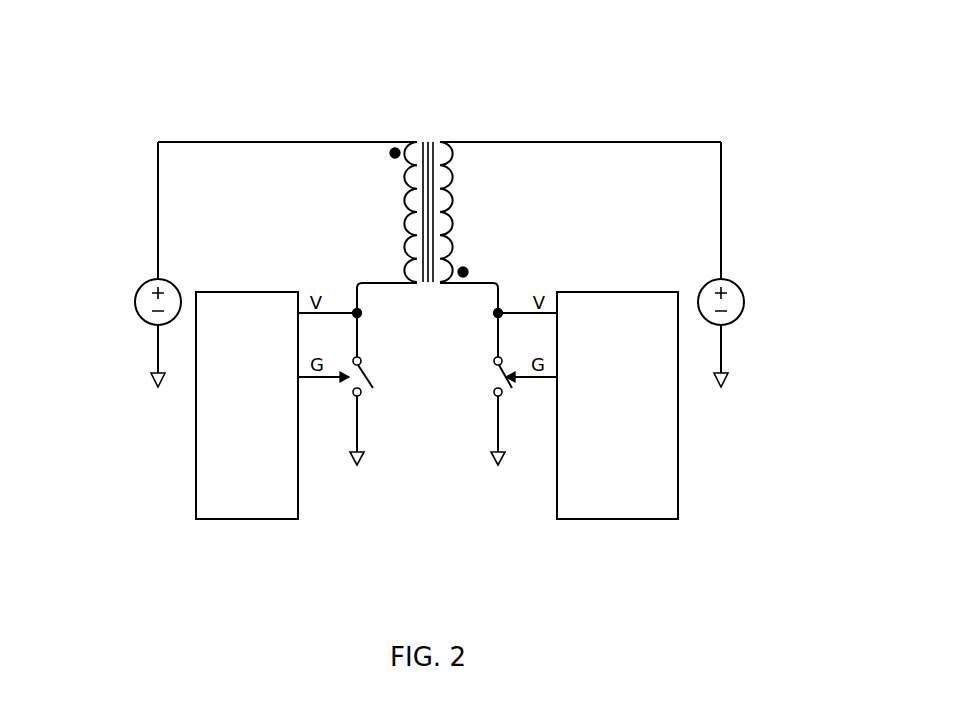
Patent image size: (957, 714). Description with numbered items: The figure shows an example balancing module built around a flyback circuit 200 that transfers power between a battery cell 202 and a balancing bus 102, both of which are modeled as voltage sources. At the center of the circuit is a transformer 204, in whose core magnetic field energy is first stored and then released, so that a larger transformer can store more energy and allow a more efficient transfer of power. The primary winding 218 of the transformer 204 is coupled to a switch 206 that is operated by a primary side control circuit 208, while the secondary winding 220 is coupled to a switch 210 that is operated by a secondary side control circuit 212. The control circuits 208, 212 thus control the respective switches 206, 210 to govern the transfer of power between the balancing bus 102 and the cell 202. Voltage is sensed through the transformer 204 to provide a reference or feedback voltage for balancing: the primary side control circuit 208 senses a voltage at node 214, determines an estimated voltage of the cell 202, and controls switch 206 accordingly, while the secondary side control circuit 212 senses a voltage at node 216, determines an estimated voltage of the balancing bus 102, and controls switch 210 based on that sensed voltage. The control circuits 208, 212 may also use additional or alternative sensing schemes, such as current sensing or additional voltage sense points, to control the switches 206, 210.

The flyback circuit 200 is at (153, 71).
The balancing bus 102 is at (167, 278).
The battery cell 202 is at (712, 279).
The transformer 204 is at (429, 187).
The primary winding 218 is at (405, 209).
The secondary winding 220 is at (453, 209).
The node 214 is at (360, 319).
The node 216 is at (495, 319).
The switch 206 is at (377, 381).
The switch 210 is at (486, 383).
The primary side control circuit 208 is at (240, 519).
The secondary side control circuit 212 is at (612, 519).